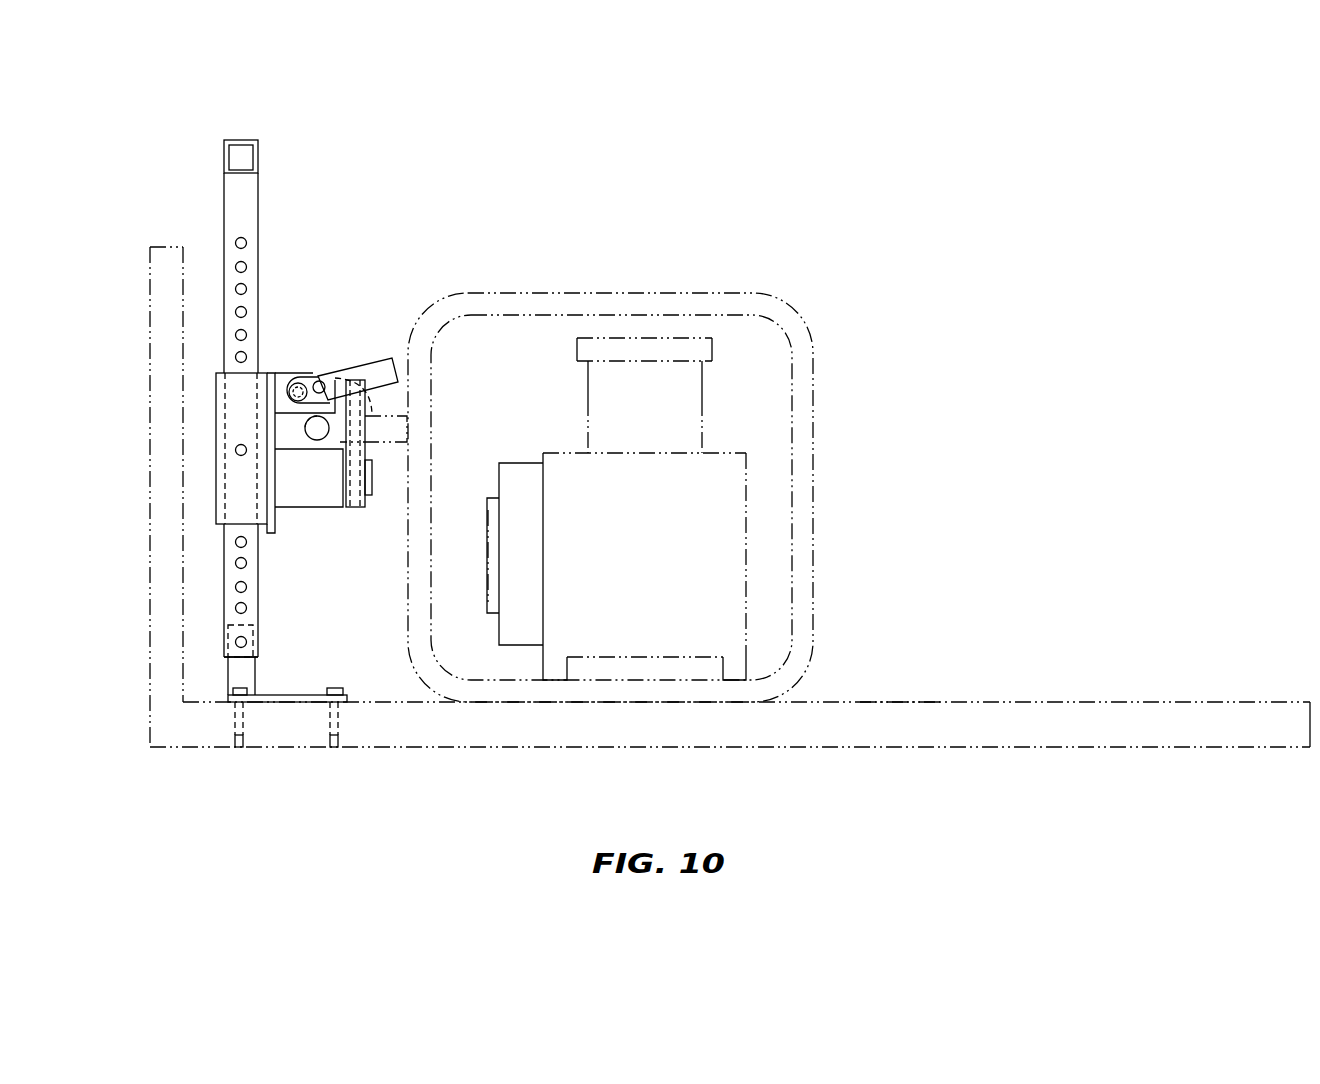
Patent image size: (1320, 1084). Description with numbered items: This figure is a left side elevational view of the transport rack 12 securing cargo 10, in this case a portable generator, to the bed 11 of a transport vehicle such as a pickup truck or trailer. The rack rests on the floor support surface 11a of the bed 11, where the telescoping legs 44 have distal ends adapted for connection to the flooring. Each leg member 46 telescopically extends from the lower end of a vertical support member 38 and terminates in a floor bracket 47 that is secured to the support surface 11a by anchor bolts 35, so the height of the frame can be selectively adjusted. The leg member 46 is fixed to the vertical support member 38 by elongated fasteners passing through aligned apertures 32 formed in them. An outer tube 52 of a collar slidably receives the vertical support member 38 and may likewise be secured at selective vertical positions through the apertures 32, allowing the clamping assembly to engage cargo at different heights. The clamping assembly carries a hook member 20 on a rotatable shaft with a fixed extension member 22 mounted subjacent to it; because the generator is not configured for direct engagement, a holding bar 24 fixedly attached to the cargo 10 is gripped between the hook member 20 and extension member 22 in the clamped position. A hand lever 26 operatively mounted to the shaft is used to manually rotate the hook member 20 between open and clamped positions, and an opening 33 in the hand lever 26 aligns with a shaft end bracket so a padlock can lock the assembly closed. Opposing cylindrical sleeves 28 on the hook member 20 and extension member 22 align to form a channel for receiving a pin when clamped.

The cargo 10 is at (687, 280).
The bed 11 is at (1058, 670).
The floor support surface 11a is at (897, 715).
The transport rack 12 is at (352, 192).
The hook member 20 is at (324, 380).
The fixed extension member 22 is at (312, 488).
The holding bar 24 is at (303, 430).
The hand lever 26 is at (373, 370).
The cylindrical sleeve 28 is at (354, 508).
The aperture 32 is at (247, 243).
The opening 33 is at (310, 378).
The anchor bolt 35 is at (240, 748).
The vertical support member 38 is at (237, 200).
The telescoping leg 44 is at (223, 667).
The leg member 46 is at (248, 673).
The floor bracket 47 is at (312, 697).
The outer tube 52 is at (216, 504).